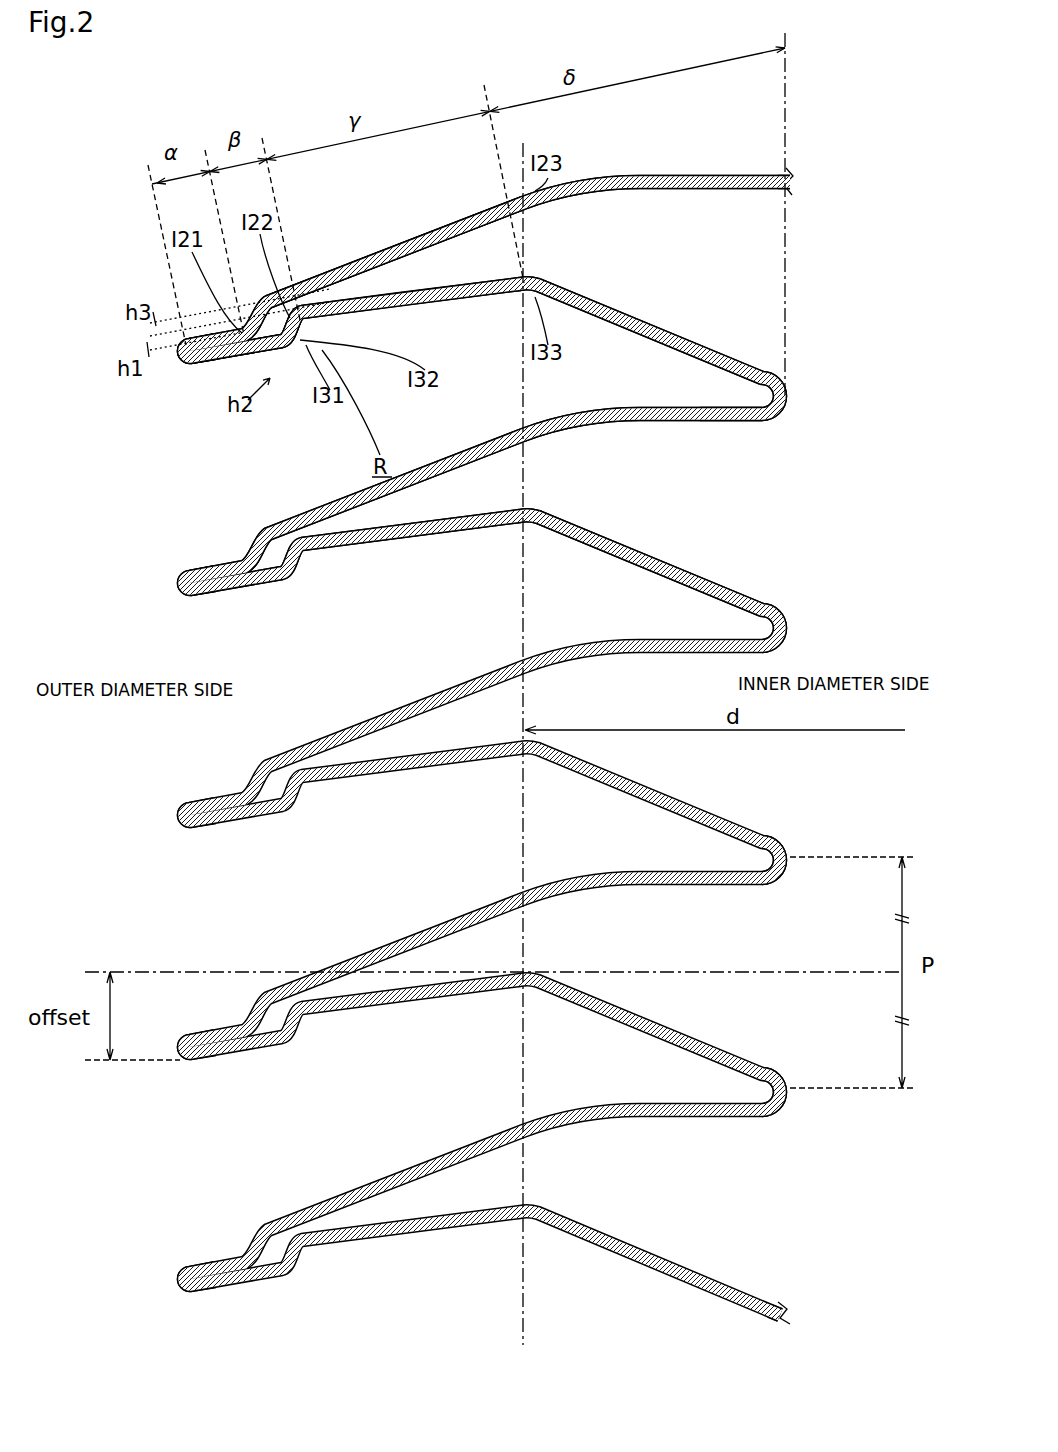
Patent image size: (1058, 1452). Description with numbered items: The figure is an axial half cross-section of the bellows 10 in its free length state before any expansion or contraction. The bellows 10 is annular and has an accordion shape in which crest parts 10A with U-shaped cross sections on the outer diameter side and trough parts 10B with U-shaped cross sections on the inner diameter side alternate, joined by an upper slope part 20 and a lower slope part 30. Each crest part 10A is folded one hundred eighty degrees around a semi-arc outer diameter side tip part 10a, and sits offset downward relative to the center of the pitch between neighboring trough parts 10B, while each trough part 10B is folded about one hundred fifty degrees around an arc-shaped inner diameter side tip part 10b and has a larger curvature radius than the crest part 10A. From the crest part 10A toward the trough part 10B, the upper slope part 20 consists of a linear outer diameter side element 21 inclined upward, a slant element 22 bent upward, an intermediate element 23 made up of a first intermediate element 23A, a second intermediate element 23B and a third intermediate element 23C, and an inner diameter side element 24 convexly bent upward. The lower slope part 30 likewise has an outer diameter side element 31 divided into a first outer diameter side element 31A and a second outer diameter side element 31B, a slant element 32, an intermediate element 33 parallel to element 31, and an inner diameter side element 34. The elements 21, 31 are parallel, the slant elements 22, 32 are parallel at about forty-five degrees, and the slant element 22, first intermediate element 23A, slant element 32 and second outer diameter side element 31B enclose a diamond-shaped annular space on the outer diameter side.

The bellows 10 is at (143, 139).
The crest part 10A is at (186, 368).
The trough part 10B is at (797, 182).
The outer diameter side tip part 10a is at (178, 366).
The inner diameter side tip part 10b is at (793, 421).
The upper slope part 20 is at (261, 515).
The outer diameter side element 21 is at (250, 327).
The slant element 22 is at (270, 304).
The intermediate element 23 is at (455, 165).
The first intermediate element 23A is at (305, 290).
The second intermediate element 23B is at (395, 252).
The third intermediate element 23C is at (470, 224).
The inner diameter side element 24 is at (612, 177).
The lower slope part 30 is at (325, 569).
The outer diameter side element 31 is at (332, 428).
The first outer diameter side element 31A is at (258, 349).
The second outer diameter side element 31B is at (297, 350).
The slant element 32 is at (385, 318).
The intermediate element 33 is at (452, 302).
The inner diameter side element 34 is at (610, 323).